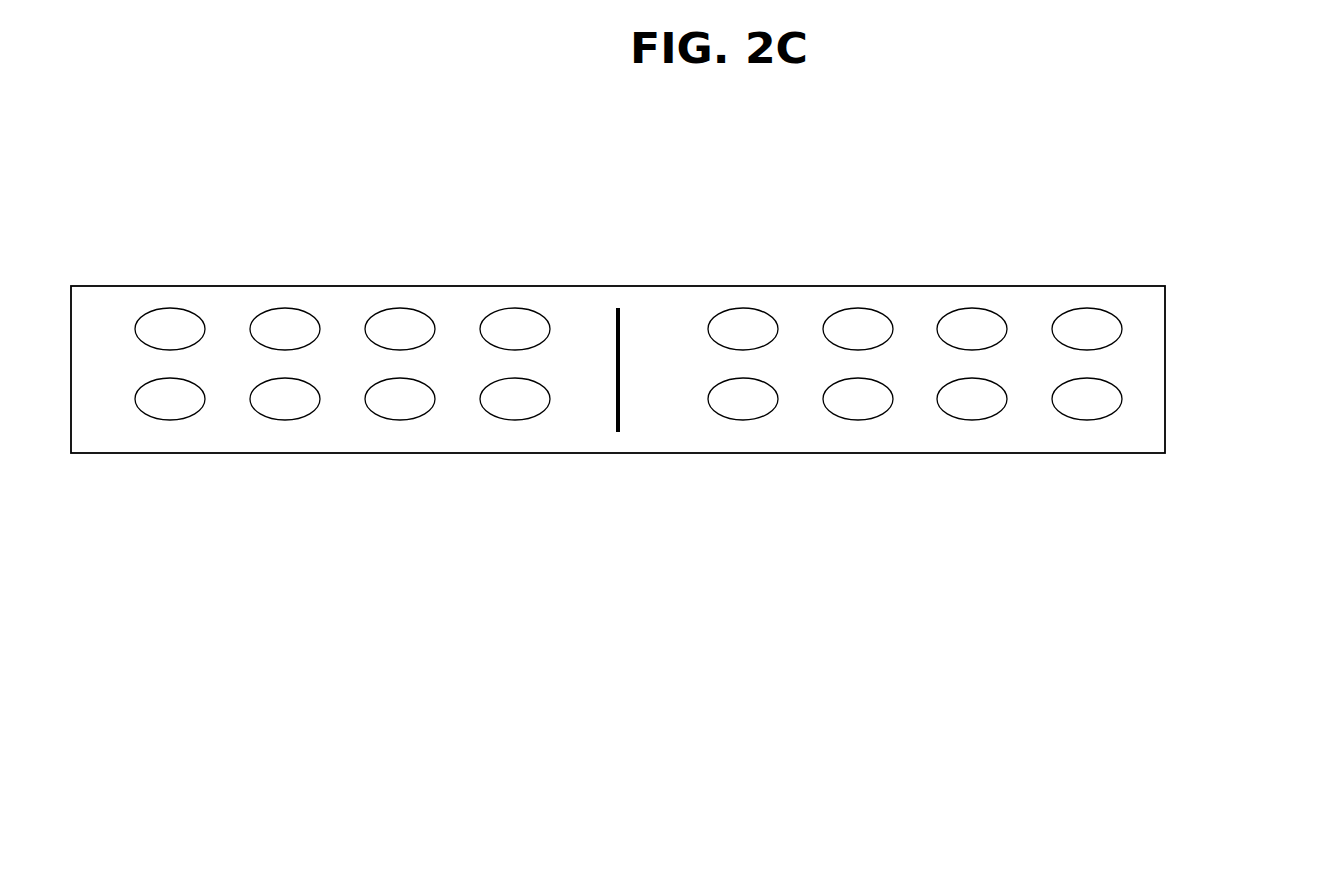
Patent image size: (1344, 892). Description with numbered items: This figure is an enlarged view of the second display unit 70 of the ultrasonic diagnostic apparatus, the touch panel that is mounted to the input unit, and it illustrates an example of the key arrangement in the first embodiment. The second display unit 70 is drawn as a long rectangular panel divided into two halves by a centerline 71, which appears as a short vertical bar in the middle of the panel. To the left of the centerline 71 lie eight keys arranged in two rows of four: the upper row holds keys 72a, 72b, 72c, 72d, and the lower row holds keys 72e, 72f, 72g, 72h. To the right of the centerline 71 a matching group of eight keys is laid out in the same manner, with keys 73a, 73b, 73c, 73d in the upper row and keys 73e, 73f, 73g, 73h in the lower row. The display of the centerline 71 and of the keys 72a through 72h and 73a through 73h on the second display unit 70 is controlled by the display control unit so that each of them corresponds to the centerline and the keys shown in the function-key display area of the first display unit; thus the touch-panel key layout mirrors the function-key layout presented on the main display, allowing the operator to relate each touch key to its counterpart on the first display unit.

The second display unit 70 is at (1165, 352).
The centerline 71 is at (617, 308).
The key 72a is at (175, 308).
The key 72b is at (283, 308).
The key 72c is at (388, 308).
The key 72d is at (495, 308).
The key 72e is at (198, 412).
The key 72f is at (305, 412).
The key 72g is at (409, 412).
The key 72h is at (515, 412).
The key 73a is at (767, 308).
The key 73b is at (872, 308).
The key 73c is at (975, 308).
The key 73d is at (1080, 308).
The key 73e is at (767, 412).
The key 73f is at (872, 412).
The key 73g is at (977, 412).
The key 73h is at (1082, 412).